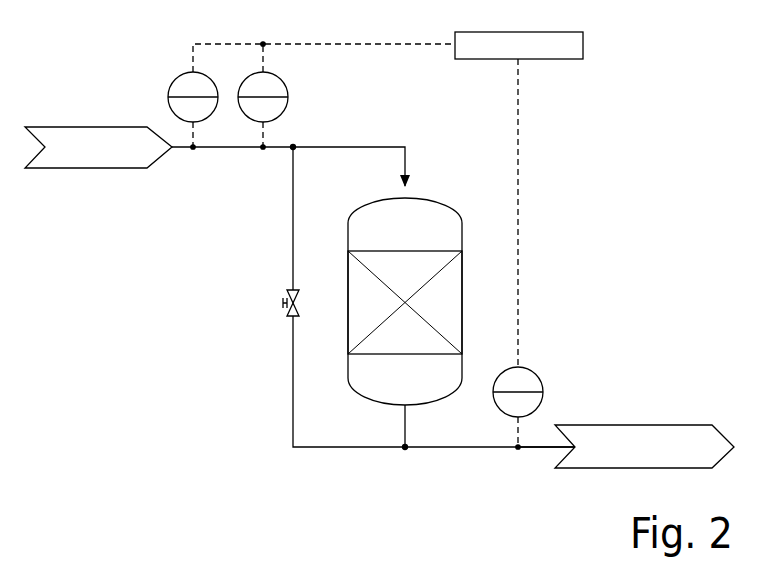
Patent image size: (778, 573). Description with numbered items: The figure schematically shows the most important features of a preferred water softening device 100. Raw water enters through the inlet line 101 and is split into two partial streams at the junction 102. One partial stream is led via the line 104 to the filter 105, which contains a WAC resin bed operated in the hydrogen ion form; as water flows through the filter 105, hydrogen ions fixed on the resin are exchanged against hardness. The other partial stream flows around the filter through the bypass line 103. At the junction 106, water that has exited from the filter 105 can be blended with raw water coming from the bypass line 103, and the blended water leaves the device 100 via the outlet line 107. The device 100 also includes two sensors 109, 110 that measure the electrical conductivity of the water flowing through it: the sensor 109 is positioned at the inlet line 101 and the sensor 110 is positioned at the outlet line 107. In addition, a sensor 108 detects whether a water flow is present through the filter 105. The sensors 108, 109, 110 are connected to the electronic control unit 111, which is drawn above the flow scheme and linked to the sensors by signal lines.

The device 100 is at (102, 437).
The inlet line 101 is at (213, 152).
The junction 102 is at (290, 152).
The bypass line 103 is at (288, 353).
The line 104 is at (366, 143).
The filter 105 is at (468, 288).
The junction 106 is at (405, 449).
The outlet line 107 is at (540, 449).
The sensor 108 is at (178, 84).
The sensor 109 is at (268, 82).
The sensor 110 is at (543, 380).
The electronic control unit 111 is at (519, 199).